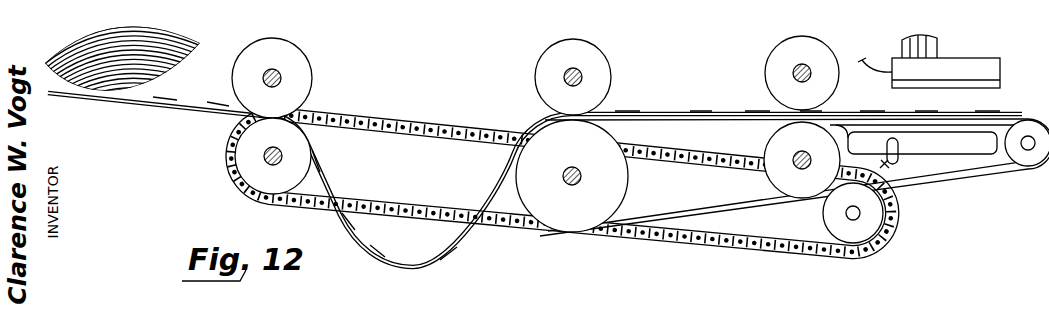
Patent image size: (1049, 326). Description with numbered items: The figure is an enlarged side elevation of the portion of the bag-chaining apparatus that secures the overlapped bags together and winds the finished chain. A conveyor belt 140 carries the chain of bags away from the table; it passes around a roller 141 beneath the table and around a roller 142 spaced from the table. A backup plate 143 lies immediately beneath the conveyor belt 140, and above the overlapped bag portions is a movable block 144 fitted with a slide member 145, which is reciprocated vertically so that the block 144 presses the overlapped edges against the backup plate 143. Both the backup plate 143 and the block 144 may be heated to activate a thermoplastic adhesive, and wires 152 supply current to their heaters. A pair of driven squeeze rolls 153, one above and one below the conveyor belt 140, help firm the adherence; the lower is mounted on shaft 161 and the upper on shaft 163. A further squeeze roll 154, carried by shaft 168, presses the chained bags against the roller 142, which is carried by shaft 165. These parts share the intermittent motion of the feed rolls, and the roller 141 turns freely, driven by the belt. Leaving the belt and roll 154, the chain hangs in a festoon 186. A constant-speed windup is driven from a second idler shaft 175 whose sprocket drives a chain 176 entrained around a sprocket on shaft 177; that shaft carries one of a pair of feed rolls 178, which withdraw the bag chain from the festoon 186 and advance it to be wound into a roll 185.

The conveyor belt 140 is at (748, 210).
The roller 141 is at (1036, 162).
The roller 142 is at (577, 215).
The backup plate 143 is at (966, 122).
The movable block 144 is at (984, 62).
The slide member 145 is at (935, 46).
The wires 152 is at (878, 50).
The squeeze rolls 153 is at (770, 58).
The squeeze roll 154 is at (550, 52).
The shaft 161 is at (812, 160).
The shaft 163 is at (792, 74).
The shaft 165 is at (572, 167).
The shaft 168 is at (562, 77).
The second idler shaft 175 is at (858, 218).
The chain 176 is at (438, 128).
The shaft 177 is at (266, 146).
The feed rolls 178 is at (288, 50).
The roll 185 is at (88, 42).
The festoon 186 is at (442, 271).